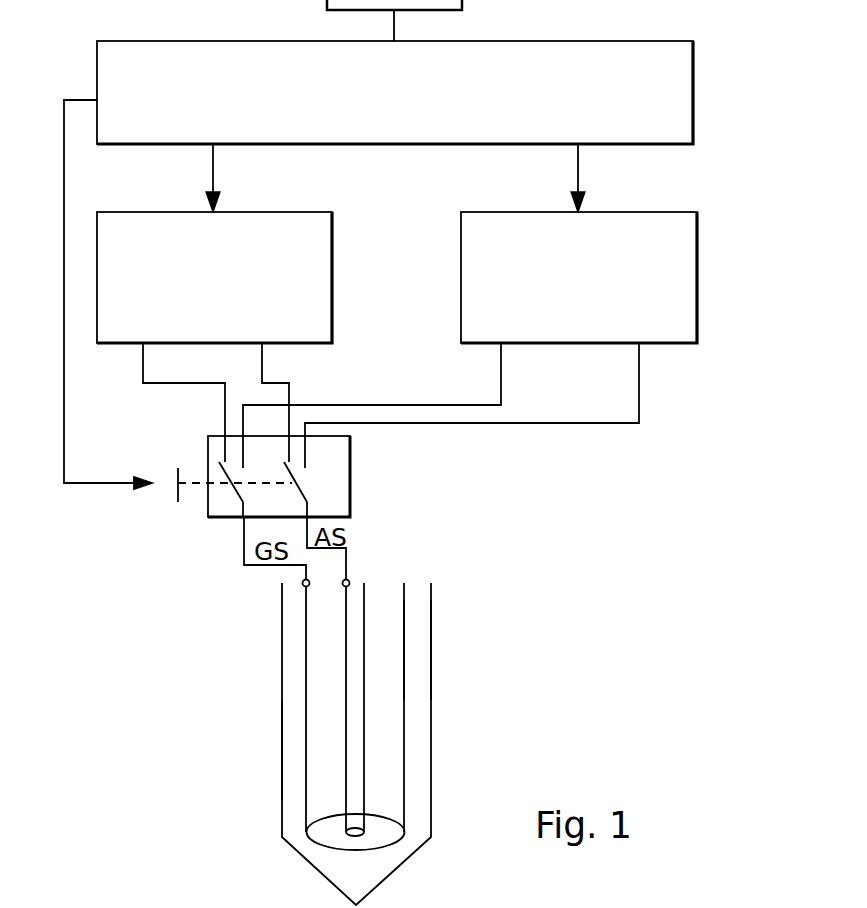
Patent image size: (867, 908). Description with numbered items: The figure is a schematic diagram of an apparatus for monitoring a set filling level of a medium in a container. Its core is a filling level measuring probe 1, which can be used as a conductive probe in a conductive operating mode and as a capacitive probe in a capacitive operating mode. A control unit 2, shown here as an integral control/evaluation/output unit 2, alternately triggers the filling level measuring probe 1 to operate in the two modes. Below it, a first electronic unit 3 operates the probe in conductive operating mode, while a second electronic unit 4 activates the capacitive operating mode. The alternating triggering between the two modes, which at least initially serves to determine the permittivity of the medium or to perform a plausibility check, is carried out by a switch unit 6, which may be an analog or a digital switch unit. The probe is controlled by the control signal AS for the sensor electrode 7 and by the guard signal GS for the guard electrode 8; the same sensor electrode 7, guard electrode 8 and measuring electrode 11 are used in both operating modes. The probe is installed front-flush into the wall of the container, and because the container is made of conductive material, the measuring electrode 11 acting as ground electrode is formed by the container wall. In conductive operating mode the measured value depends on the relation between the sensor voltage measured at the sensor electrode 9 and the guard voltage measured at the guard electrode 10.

The filling level measuring probe 1 is at (122, 758).
The control unit 2 is at (384, 106).
The first electronic unit 3 is at (204, 291).
The second electronic unit 4 is at (569, 291).
The switch unit 6 is at (333, 488).
The sensor electrode 7 is at (372, 610).
The guard electrode 8 is at (408, 610).
The sensor electrode 9 is at (328, 672).
The guard electrode 10 is at (298, 765).
The measuring electrode 11 is at (435, 610).